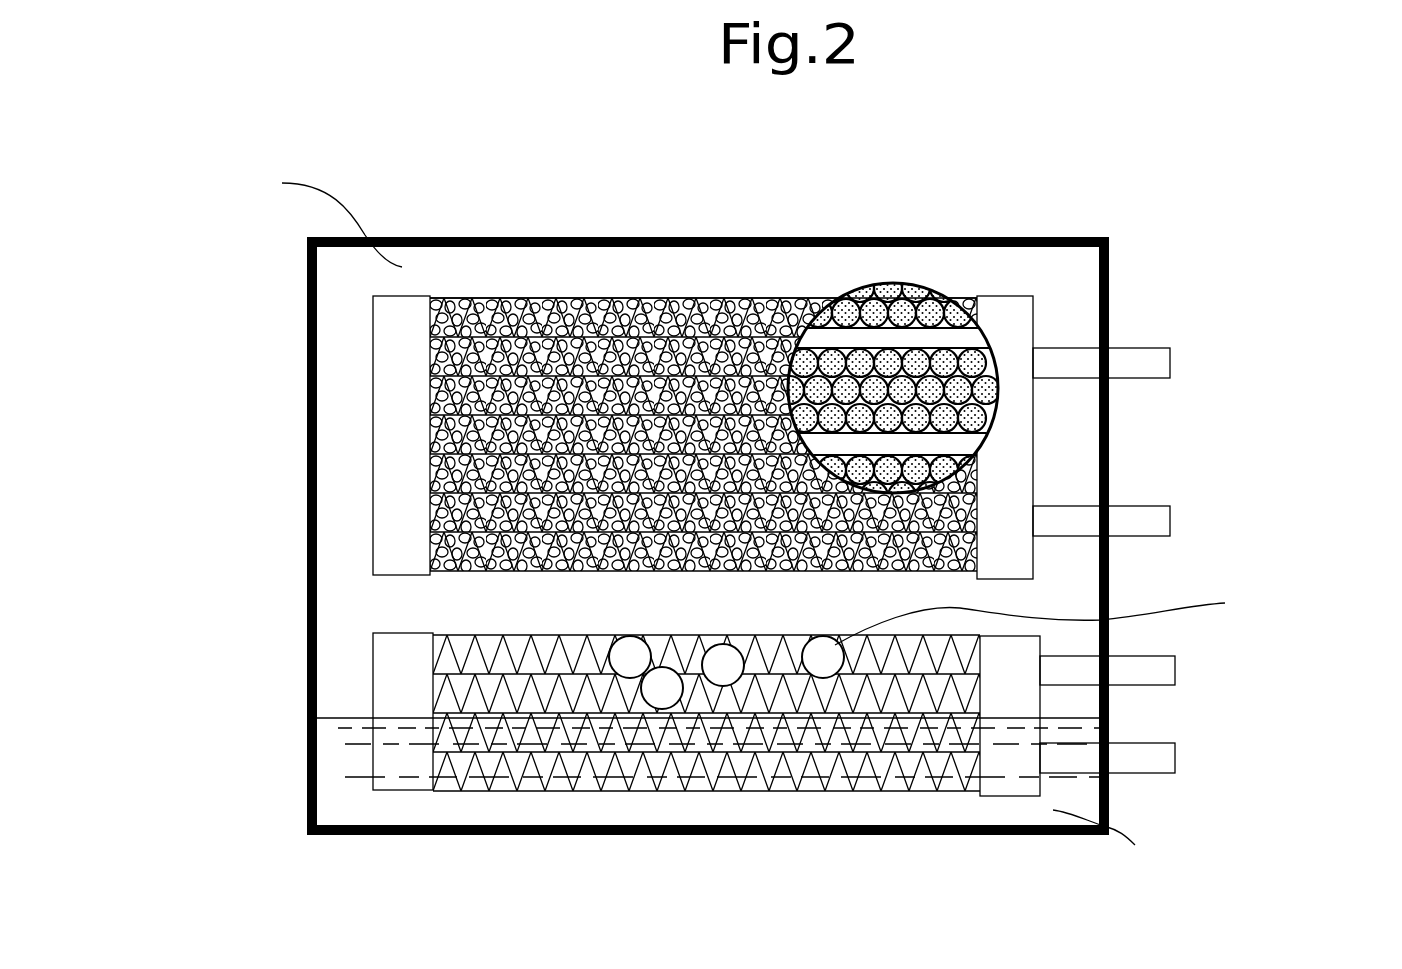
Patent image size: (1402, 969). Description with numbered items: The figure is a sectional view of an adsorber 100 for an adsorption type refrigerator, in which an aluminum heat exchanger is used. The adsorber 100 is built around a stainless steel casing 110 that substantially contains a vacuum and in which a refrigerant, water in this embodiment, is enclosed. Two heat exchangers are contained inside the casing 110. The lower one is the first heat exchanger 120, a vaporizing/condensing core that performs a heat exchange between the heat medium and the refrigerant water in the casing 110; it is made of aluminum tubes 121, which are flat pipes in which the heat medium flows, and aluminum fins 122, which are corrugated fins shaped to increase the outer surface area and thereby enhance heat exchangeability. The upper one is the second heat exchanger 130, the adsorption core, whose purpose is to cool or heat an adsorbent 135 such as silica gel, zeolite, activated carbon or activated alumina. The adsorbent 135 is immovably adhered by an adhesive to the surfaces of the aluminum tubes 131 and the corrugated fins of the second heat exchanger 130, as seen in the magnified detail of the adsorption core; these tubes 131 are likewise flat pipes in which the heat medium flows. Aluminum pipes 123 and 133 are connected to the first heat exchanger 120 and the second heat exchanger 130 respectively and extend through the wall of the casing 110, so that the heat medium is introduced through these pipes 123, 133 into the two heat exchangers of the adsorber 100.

The adsorber 100 is at (732, 525).
The casing 110 is at (1108, 483).
The first heat exchanger 120 is at (708, 769).
The tube 121 is at (643, 790).
The fin 122 is at (443, 790).
The pipe 123 is at (1163, 670).
The second heat exchanger 130 is at (718, 372).
The tube 131 is at (630, 305).
The pipe 133 is at (1160, 363).
The adsorbent 135 is at (986, 357).